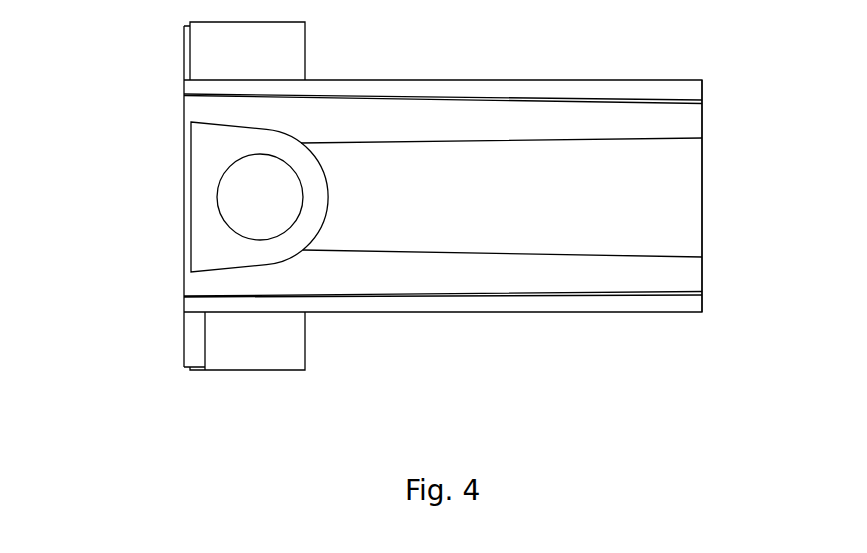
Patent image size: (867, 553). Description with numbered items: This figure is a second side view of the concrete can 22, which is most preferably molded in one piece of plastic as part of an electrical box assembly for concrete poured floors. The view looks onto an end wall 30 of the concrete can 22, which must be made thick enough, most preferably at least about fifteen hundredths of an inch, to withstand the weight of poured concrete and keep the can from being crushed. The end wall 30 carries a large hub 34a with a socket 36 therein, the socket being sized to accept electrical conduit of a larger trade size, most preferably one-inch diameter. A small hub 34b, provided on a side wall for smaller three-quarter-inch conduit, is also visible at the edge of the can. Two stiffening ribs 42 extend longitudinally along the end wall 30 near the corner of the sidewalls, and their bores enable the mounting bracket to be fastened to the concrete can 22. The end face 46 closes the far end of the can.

The concrete can 22 is at (132, 100).
The end wall 30 is at (570, 210).
The large hub 34a is at (328, 193).
The small hub 34b is at (305, 340).
The socket 36 is at (232, 197).
The stiffening rib 42 is at (548, 277).
The end face 46 is at (702, 196).